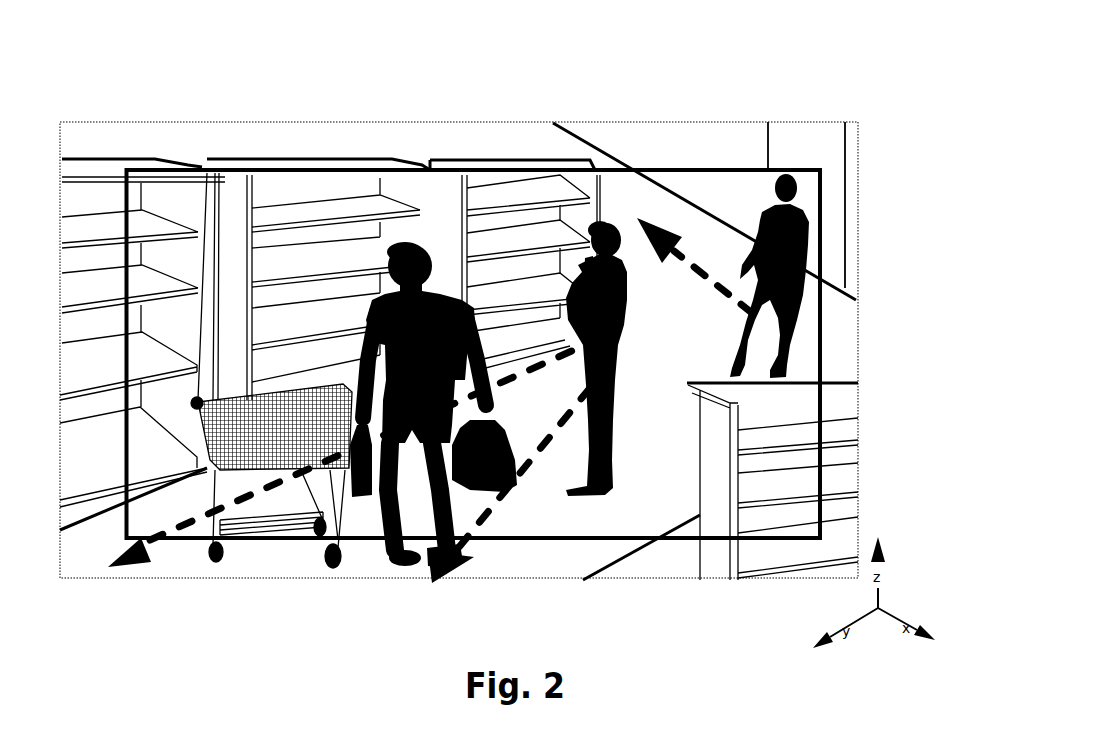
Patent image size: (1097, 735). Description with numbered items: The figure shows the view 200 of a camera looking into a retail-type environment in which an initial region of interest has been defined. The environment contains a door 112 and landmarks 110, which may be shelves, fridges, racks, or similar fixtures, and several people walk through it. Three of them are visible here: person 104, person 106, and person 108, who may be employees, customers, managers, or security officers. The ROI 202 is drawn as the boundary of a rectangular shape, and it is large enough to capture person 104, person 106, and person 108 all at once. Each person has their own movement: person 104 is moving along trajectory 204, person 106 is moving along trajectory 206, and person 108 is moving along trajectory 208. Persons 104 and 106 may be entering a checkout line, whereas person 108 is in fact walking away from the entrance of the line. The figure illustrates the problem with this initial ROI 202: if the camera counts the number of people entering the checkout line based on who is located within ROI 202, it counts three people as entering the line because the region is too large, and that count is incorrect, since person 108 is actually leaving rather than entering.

The view 200 is at (512, 45).
The landmarks 110 is at (290, 166).
The person 104 is at (420, 253).
The person 106 is at (618, 325).
The person 108 is at (805, 220).
The door 112 is at (830, 137).
The ROI 202 is at (820, 318).
The trajectory 204 is at (183, 537).
The trajectory 206 is at (532, 470).
The trajectory 208 is at (663, 228).